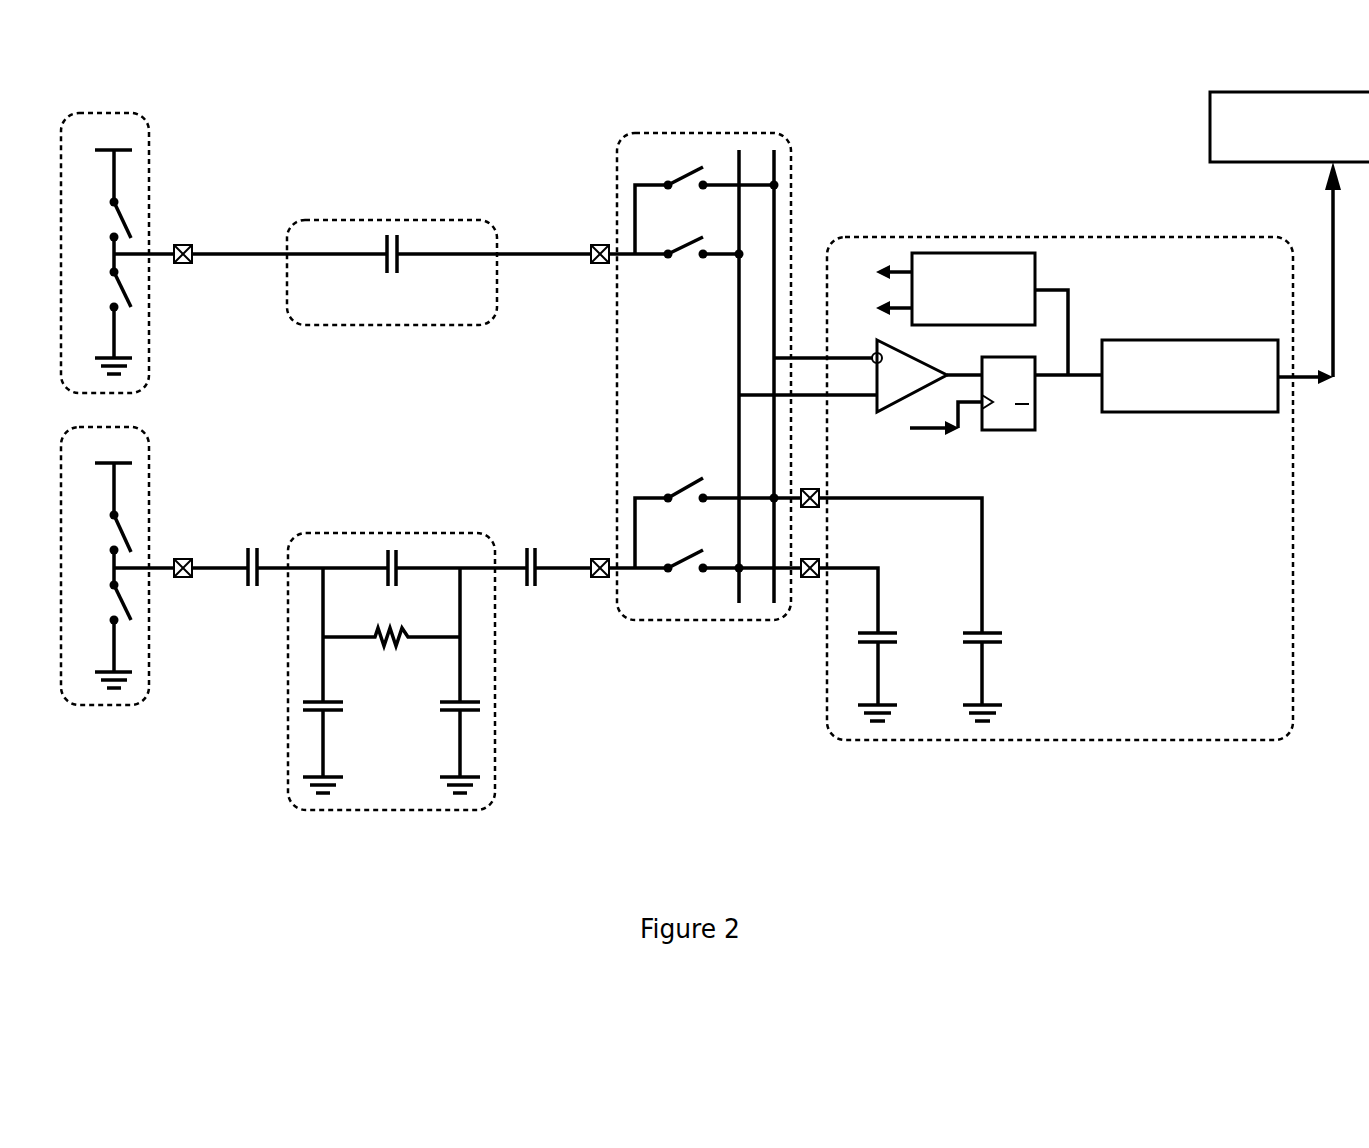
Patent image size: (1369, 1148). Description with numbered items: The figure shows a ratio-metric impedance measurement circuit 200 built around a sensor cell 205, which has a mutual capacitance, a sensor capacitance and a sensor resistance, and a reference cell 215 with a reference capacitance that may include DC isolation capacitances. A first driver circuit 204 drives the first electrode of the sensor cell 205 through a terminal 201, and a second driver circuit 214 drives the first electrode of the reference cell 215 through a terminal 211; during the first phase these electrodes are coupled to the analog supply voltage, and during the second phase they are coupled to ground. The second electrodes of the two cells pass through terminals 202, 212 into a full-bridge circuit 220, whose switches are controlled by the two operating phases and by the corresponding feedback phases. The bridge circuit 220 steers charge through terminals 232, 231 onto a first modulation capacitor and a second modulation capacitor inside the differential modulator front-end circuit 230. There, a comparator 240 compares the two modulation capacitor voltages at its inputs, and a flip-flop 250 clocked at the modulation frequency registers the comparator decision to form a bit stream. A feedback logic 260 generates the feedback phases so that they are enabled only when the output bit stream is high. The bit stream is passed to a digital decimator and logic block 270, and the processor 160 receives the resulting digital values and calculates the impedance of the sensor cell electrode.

The ratio-metric impedance measurement circuit 200 is at (67, 100).
The Fs driver (reference) 214 is at (95, 253).
The terminal 211 is at (184, 241).
The reference cell 215 is at (392, 291).
The terminal 212 is at (598, 241).
The bridge circuit 220 is at (705, 395).
The Fs driver (sensor) 204 is at (95, 566).
The terminal 201 is at (183, 583).
The sensor cell 205 is at (407, 691).
The terminal 202 is at (598, 583).
The terminal 232 is at (807, 478).
The terminal 231 is at (807, 589).
The differential modulator front-end circuit 230 is at (1080, 451).
The comparator 240 is at (913, 373).
The flip-flop 250 is at (1036, 412).
The feedback logic 260 is at (960, 311).
The digital decimator and logic block 270 is at (1221, 287).
The processor 160 is at (1289, 127).